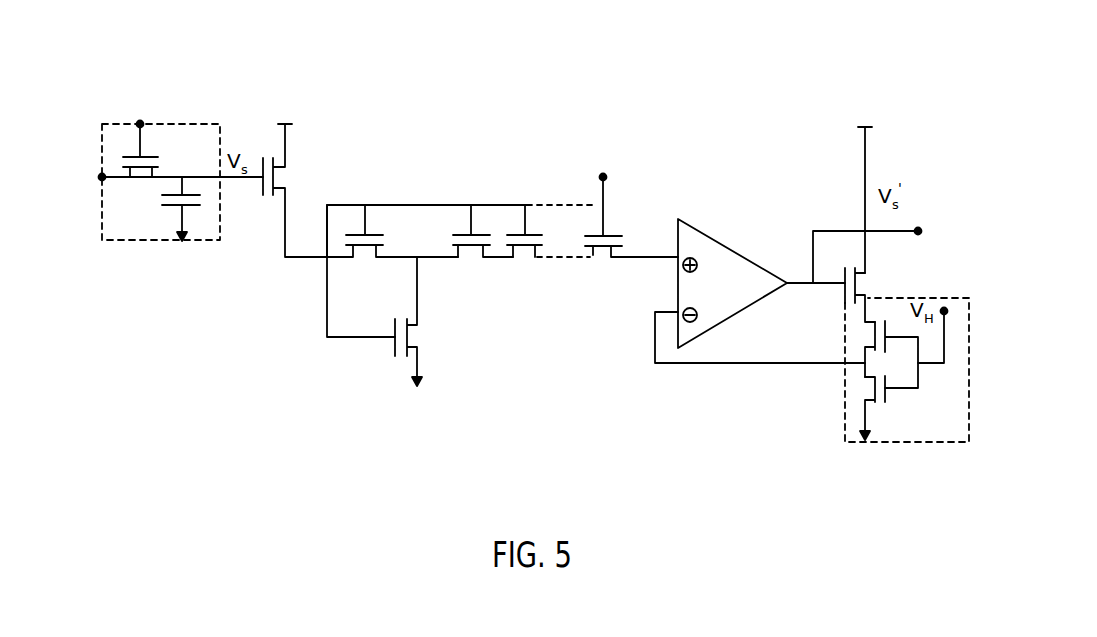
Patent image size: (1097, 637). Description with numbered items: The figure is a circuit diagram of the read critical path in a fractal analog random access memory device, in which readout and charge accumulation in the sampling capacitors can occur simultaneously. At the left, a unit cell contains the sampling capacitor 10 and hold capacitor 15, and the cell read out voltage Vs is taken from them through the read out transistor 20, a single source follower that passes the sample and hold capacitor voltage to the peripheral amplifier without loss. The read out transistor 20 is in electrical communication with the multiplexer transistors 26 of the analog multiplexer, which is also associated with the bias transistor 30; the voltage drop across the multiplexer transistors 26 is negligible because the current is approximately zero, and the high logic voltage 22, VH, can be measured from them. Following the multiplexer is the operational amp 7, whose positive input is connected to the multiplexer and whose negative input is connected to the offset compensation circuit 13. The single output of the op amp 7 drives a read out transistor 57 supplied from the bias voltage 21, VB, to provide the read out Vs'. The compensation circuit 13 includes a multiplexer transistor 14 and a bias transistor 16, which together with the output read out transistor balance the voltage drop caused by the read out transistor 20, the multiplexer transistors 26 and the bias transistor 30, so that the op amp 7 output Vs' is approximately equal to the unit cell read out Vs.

The operational amp 7 is at (729, 294).
The sampling capacitor 10 is at (186, 194).
The offset compensation circuit 13 is at (970, 362).
The multiplexer transistor 14 is at (873, 342).
The hold capacitor 15 is at (155, 168).
The bias transistor 16 is at (873, 397).
The read out transistor 20 is at (280, 178).
The bias voltage 21 is at (291, 125).
The high logic voltage 22 is at (603, 173).
The multiplexer transistors 26 is at (363, 250).
The bias transistor 30 is at (412, 337).
The output transistor 57 is at (860, 285).